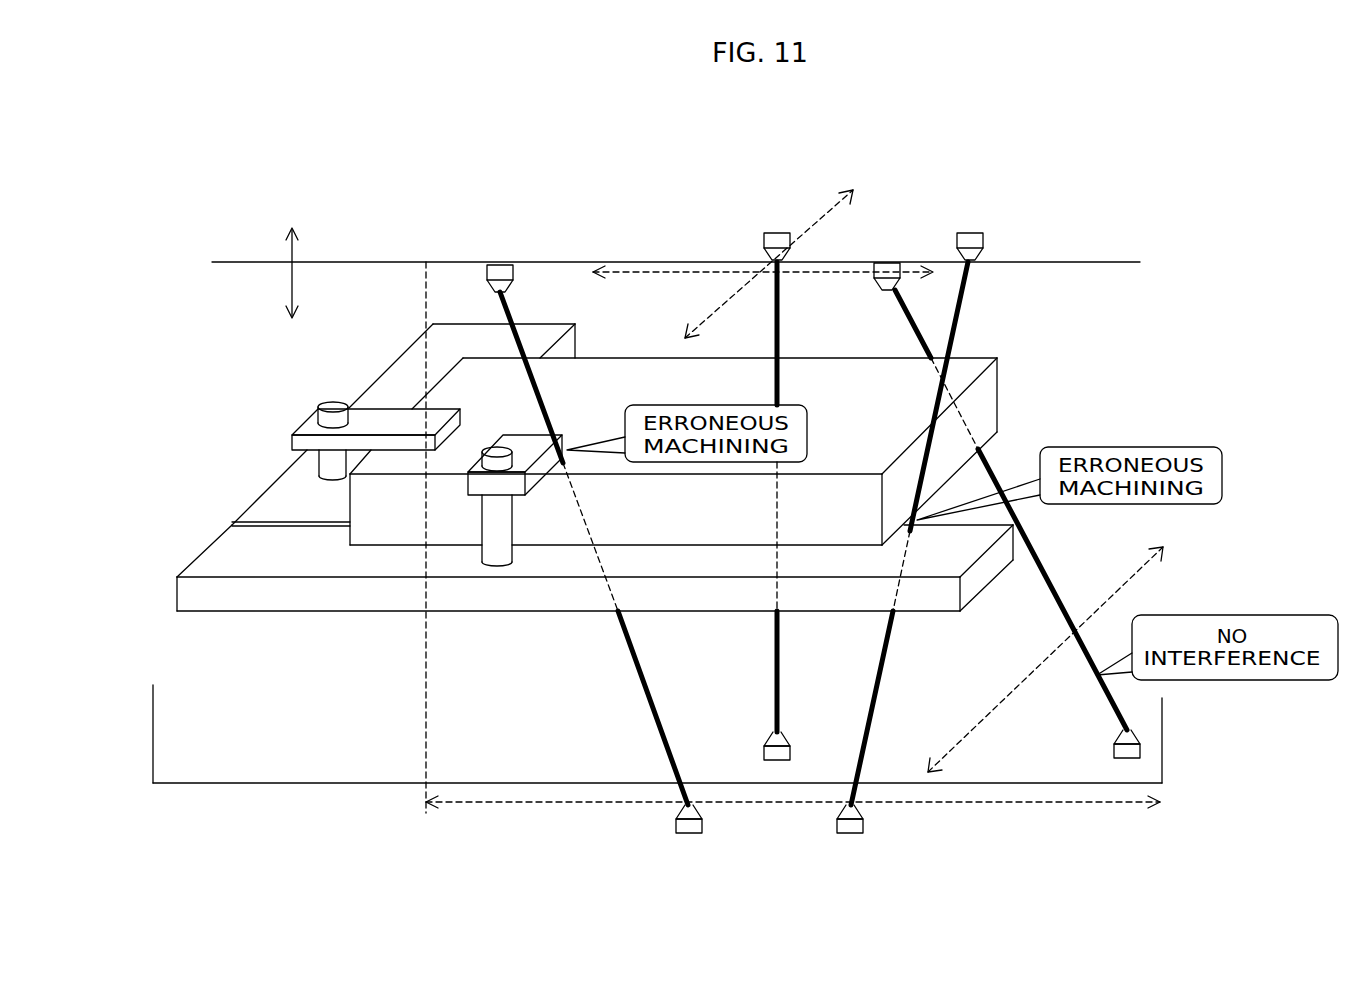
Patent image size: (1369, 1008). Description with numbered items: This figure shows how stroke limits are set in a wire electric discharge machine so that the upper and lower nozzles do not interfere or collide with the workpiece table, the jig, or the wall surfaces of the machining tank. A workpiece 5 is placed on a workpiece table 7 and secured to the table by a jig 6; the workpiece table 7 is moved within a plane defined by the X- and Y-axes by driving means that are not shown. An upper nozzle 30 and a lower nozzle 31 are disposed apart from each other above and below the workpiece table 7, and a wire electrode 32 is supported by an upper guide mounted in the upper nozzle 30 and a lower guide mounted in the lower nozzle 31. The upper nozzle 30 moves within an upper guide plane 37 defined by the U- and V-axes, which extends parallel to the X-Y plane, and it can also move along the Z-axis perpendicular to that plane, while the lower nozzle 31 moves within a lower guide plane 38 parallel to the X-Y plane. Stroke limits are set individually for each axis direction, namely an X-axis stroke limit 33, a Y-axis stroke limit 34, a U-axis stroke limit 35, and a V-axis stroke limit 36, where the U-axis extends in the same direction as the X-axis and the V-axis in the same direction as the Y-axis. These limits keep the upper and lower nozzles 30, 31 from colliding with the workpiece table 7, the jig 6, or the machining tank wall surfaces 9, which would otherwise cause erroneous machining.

The workpiece 5 is at (633, 363).
The jig 6 is at (307, 425).
The workpiece table 7 is at (227, 527).
The machining tank wall surfaces 9 is at (1180, 740).
The upper nozzle 30 is at (492, 263).
The lower nozzle 31 is at (695, 833).
The wire electrode 32 is at (630, 658).
The X-axis stroke limit 33 is at (958, 805).
The Y-axis stroke limit 34 is at (1145, 563).
The U-axis stroke limit 35 is at (695, 270).
The V-axis stroke limit 36 is at (827, 210).
The upper guide plane 37 is at (243, 262).
The lower guide plane 38 is at (224, 784).